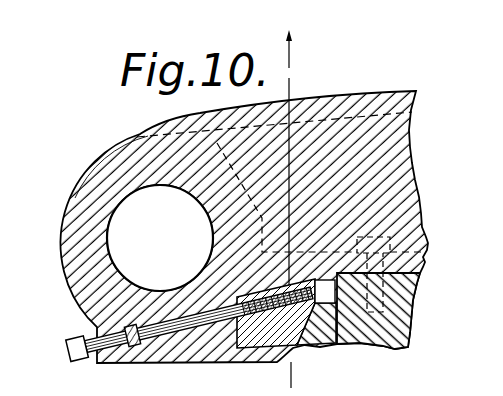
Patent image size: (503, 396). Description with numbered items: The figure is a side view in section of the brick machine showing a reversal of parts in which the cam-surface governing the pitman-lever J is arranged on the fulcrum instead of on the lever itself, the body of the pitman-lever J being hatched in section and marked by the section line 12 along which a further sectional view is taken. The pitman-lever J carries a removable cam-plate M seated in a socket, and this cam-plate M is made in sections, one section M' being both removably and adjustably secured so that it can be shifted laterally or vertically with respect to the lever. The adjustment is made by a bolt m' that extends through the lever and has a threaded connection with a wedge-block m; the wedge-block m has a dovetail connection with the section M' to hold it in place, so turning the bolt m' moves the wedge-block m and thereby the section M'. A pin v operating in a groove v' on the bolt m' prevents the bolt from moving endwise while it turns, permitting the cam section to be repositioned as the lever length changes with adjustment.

The section line 12 is at (297, 208).
The pitman-lever J is at (413, 168).
The cam-plate M is at (392, 301).
The section of cam-plate M' is at (322, 343).
The wedge-block m is at (286, 304).
The bolt m' is at (73, 366).
The pin v is at (132, 360).
The groove v' is at (198, 307).